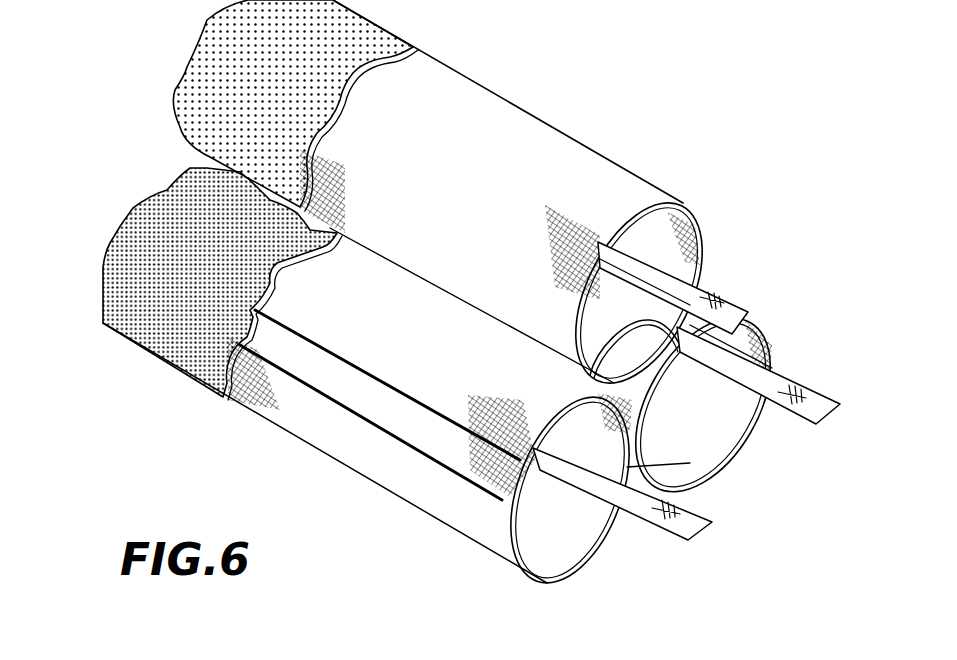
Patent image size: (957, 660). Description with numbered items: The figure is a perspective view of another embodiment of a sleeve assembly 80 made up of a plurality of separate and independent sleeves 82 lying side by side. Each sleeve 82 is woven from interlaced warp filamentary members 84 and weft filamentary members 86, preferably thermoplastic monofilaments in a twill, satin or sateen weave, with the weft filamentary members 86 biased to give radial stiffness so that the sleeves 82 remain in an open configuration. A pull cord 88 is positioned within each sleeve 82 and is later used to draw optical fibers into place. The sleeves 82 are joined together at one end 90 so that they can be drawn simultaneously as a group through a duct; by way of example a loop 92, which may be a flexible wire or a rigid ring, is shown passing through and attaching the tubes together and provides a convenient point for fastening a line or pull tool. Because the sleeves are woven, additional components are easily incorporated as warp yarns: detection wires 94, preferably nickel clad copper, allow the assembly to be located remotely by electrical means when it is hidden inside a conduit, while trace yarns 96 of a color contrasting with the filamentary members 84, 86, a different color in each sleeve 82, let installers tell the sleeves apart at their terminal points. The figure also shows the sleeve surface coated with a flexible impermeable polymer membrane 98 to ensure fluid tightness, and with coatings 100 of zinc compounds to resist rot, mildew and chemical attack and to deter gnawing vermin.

The sleeve assembly 80 is at (456, 299).
The sleeve 82 is at (490, 122).
The warp filamentary member 84 is at (550, 207).
The weft filamentary member 86 is at (550, 212).
The pull cord 88 is at (815, 407).
The end 90 is at (690, 463).
The loop 92 is at (672, 390).
The detection wire 94 is at (337, 403).
The trace yarn 96 is at (313, 340).
The flexible impermeable polymer membrane 98 is at (210, 67).
The coating of zinc compounds 100 is at (170, 213).